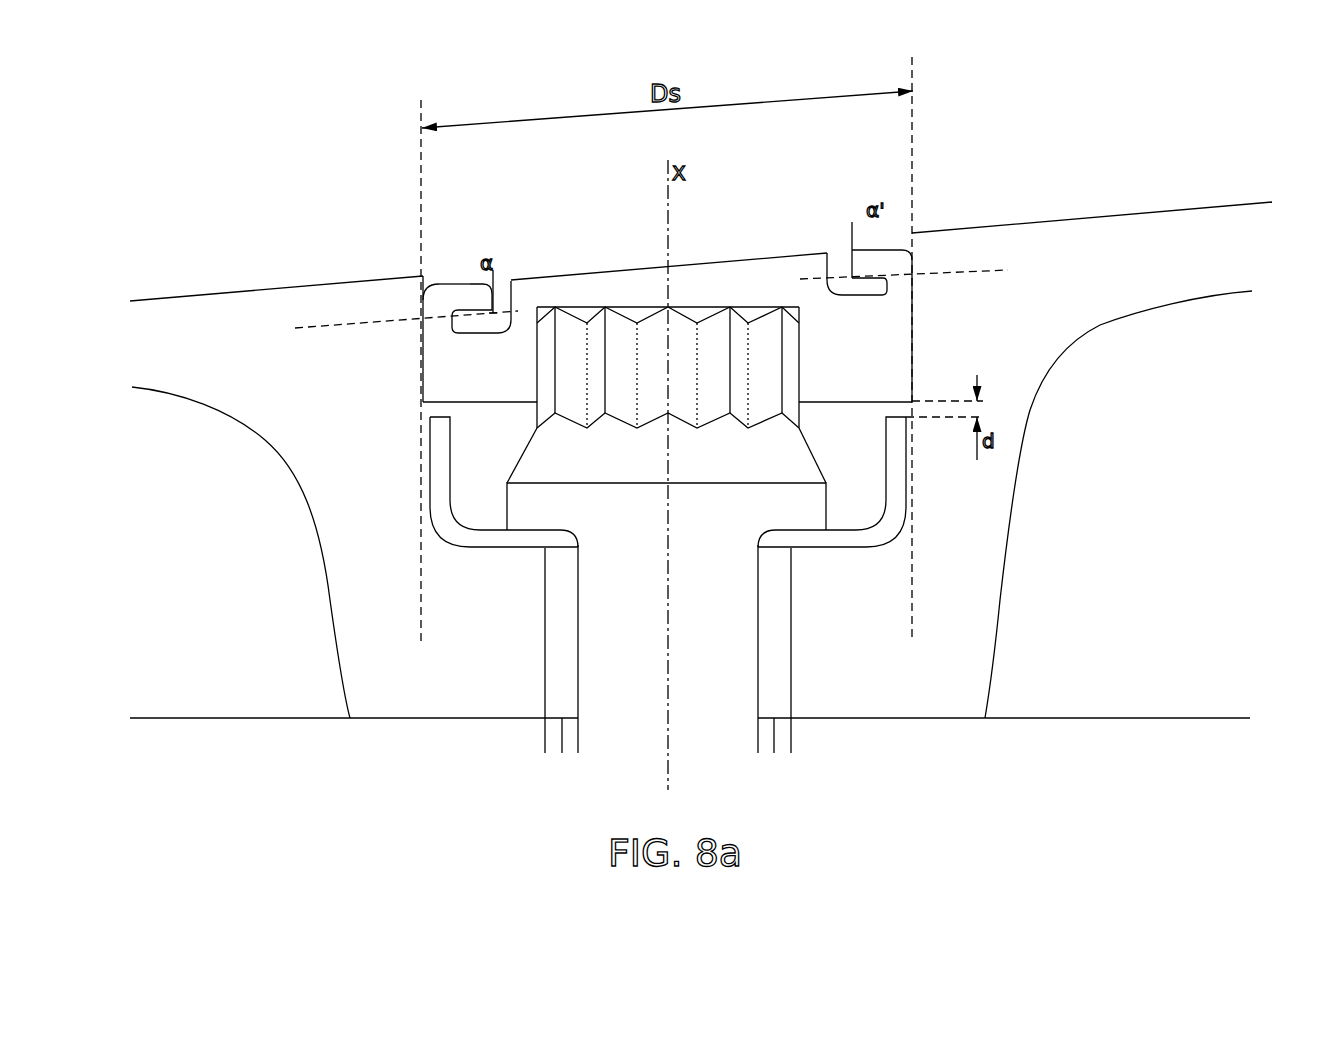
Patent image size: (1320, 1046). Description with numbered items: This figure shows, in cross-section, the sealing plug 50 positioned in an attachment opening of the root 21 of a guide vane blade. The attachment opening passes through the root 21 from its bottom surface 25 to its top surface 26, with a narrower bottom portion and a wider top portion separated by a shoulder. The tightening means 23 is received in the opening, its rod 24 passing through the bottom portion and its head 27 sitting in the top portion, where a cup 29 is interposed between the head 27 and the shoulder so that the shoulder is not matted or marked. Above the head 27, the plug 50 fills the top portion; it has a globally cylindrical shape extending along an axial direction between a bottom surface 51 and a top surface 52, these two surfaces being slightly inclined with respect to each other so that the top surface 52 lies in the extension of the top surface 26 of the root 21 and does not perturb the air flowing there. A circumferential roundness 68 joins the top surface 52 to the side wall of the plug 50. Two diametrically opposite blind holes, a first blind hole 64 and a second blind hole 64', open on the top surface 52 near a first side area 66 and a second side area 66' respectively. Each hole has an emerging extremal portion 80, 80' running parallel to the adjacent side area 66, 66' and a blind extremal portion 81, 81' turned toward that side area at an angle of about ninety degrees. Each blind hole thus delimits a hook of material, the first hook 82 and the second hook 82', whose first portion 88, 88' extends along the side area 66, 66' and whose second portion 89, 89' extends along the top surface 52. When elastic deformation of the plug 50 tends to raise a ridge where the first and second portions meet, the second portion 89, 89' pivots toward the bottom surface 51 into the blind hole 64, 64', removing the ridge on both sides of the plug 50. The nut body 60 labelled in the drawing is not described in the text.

The root 21 is at (1116, 254).
The tightening means 23 is at (779, 618).
The rod 24 is at (726, 687).
The bottom surface 25 is at (372, 723).
The top surface 26 is at (195, 295).
The head 27 is at (765, 369).
The cup 29 is at (500, 544).
The plug 50 is at (875, 365).
The bottom surface 51 is at (462, 405).
The top surface 52 is at (621, 268).
The nut body 60 is at (542, 377).
The first blind hole 64 is at (488, 233).
The second blind hole 64' is at (815, 214).
The first side area 66 is at (279, 360).
The second side area 66' is at (1019, 331).
The circumferential roundness 68 is at (435, 282).
The emerging extremal portion 80 is at (501, 247).
The emerging extremal portion 80' is at (821, 233).
The blind extremal portion 81 is at (343, 384).
The blind extremal portion 81' is at (1009, 310).
The first hook 82 is at (430, 222).
The second hook 82' is at (911, 215).
The first portion 88 is at (350, 266).
The first portion 88' is at (848, 212).
The second portion 89 is at (464, 237).
The second portion 89' is at (966, 229).